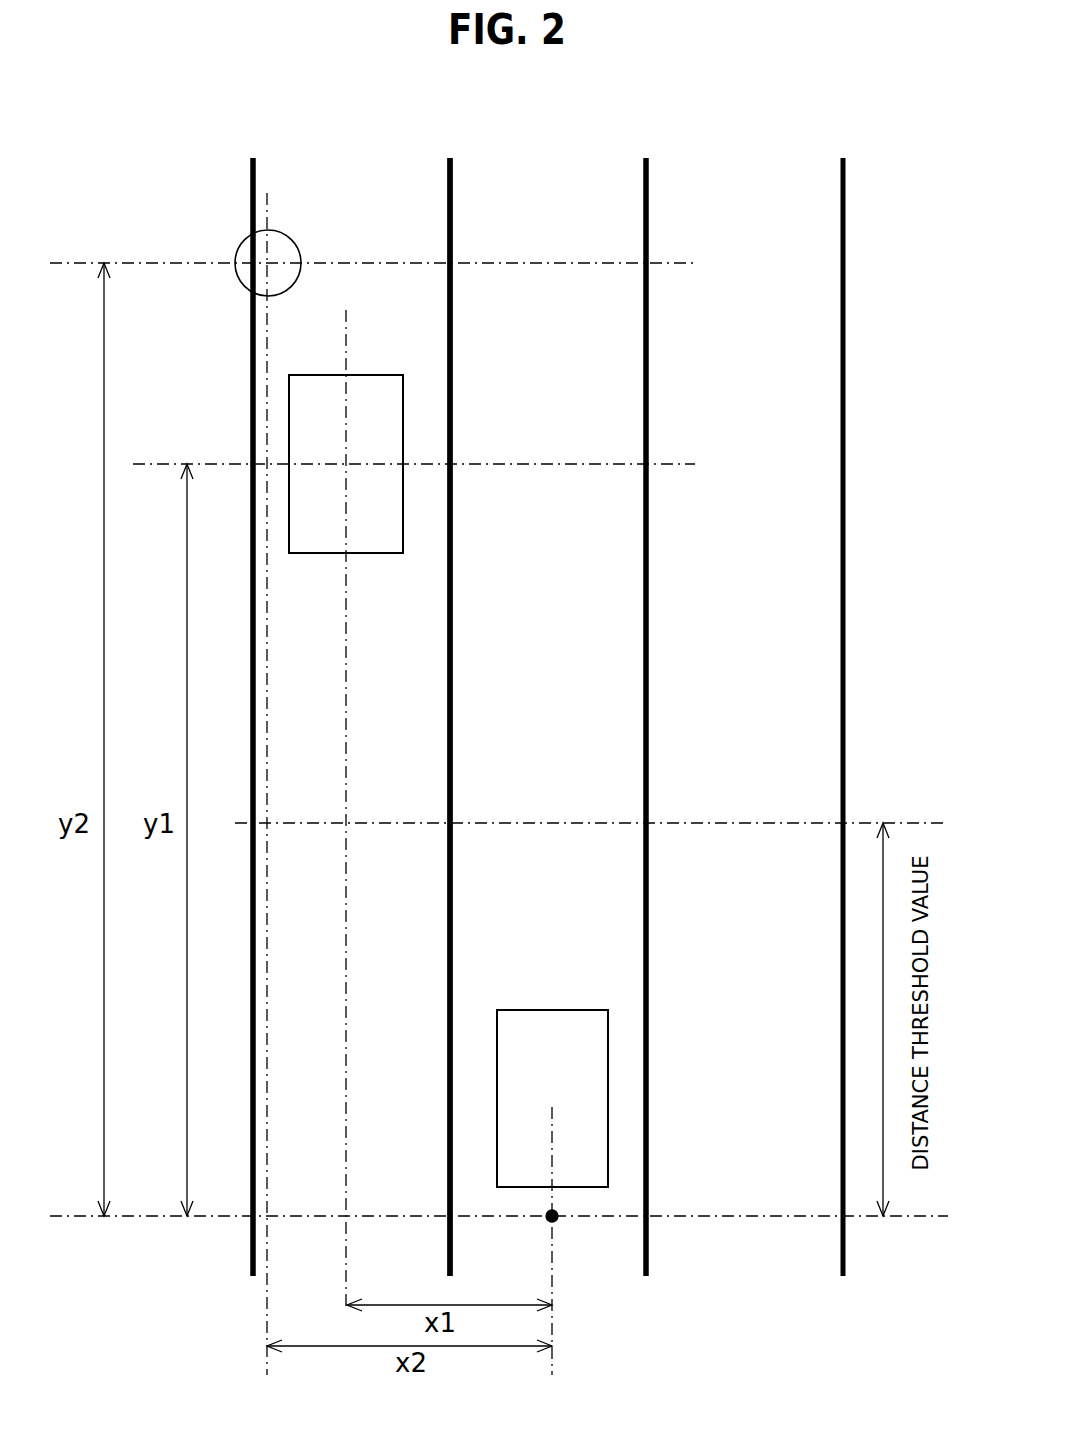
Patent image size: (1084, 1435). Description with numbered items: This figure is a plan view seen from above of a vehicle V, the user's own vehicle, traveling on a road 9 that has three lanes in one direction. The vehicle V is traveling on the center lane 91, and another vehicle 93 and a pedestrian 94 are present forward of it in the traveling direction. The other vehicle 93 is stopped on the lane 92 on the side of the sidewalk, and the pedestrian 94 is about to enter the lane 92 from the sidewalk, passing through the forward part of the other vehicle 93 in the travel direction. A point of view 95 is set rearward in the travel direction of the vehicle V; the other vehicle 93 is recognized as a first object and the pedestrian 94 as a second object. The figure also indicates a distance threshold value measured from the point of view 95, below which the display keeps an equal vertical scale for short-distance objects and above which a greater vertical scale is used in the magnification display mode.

The road 9 is at (772, 120).
The center lane 91 is at (538, 168).
The lane on the side of the sidewalk 92 is at (349, 168).
The other vehicle 93 is at (389, 410).
The pedestrian 94 is at (300, 248).
The point of view 95 is at (558, 1222).
The vehicle V is at (600, 1085).